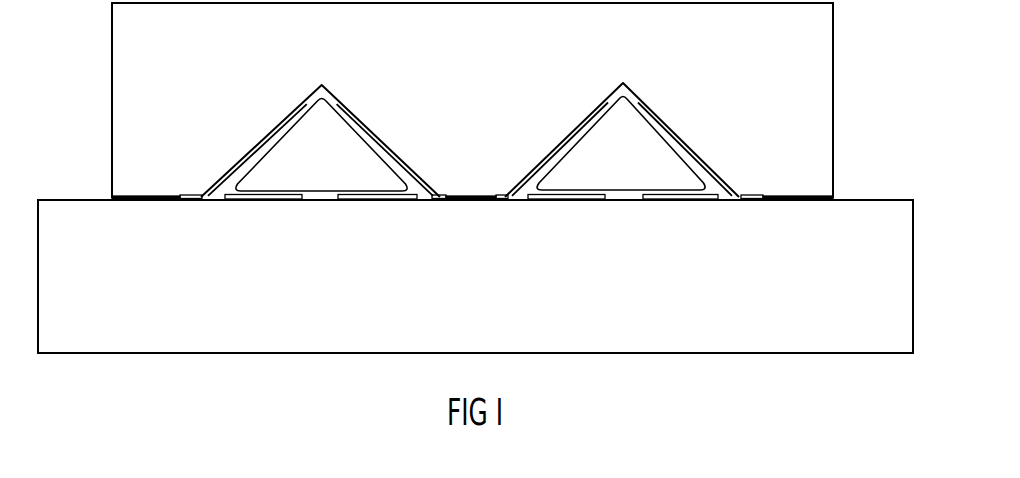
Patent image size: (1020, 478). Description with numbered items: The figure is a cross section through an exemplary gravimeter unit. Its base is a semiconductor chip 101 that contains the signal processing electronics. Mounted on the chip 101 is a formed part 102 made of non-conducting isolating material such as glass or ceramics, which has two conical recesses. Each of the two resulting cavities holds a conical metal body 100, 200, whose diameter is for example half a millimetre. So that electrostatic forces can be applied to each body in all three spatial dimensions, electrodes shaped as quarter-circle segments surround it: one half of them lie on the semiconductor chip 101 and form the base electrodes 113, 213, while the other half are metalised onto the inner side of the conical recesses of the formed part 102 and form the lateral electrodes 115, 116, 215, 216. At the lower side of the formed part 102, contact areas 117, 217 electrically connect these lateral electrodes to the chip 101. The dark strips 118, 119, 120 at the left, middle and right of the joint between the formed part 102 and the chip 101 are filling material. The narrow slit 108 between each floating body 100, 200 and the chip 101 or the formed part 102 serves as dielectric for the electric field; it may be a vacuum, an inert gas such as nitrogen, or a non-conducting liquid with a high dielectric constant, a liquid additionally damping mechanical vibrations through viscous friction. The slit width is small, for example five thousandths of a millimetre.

The conical metal body 100 is at (315, 180).
The semiconductor chip 101 is at (652, 340).
The formed part 102 is at (827, 95).
The slit 108 is at (321, 86).
The base electrodes 113 is at (258, 202).
The lateral electrode 115 is at (263, 135).
The lateral electrode 116 is at (377, 133).
The contact areas 117 is at (192, 202).
The filling material 118 is at (148, 201).
The filling material 119 is at (470, 202).
The filling material 120 is at (802, 202).
The conical metal body 200 is at (615, 178).
The base electrodes 213 is at (560, 202).
The lateral electrode 215 is at (683, 133).
The lateral electrode 216 is at (562, 132).
The contact areas 217 is at (498, 202).